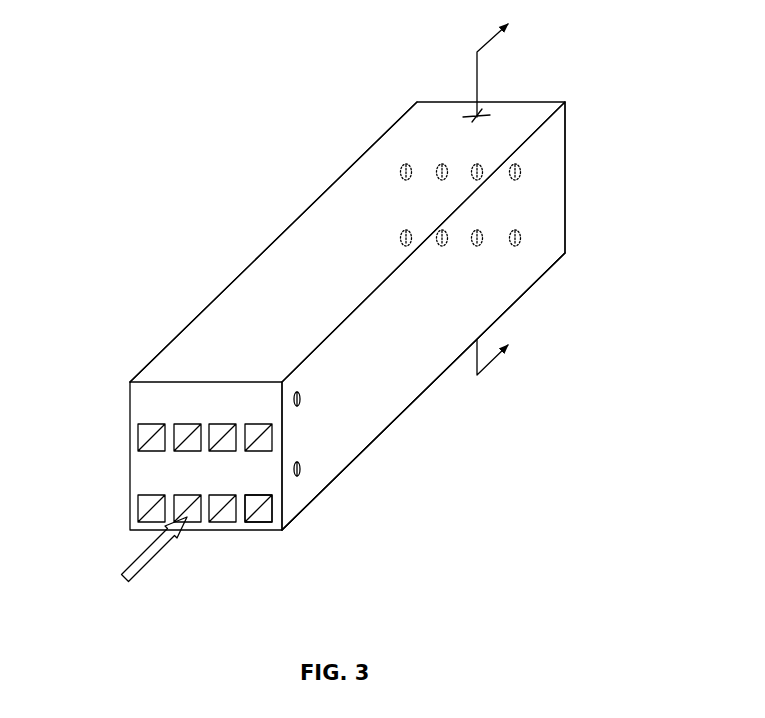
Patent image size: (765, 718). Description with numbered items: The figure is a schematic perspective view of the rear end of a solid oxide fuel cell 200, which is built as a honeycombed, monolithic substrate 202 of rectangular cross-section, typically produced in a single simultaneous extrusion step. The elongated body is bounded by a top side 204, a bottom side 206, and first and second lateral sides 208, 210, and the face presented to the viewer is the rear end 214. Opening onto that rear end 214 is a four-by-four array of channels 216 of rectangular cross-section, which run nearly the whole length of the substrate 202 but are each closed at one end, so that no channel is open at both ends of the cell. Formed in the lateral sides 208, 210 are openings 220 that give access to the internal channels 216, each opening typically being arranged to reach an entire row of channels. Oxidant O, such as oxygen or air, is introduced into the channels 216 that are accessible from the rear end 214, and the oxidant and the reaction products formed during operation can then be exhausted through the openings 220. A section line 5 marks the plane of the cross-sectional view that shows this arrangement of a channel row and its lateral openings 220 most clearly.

The solid oxide fuel cell 200 is at (136, 112).
The substrate 202 is at (251, 238).
The top side 204 is at (358, 175).
The bottom side 206 is at (367, 473).
The first lateral side 208 is at (403, 393).
The second lateral side 210 is at (130, 473).
The rear end 214 is at (273, 483).
The channels 216 is at (148, 440).
The openings 220 is at (542, 172).
The section line 5- 5 is at (485, 201).
The oxidant O is at (153, 555).